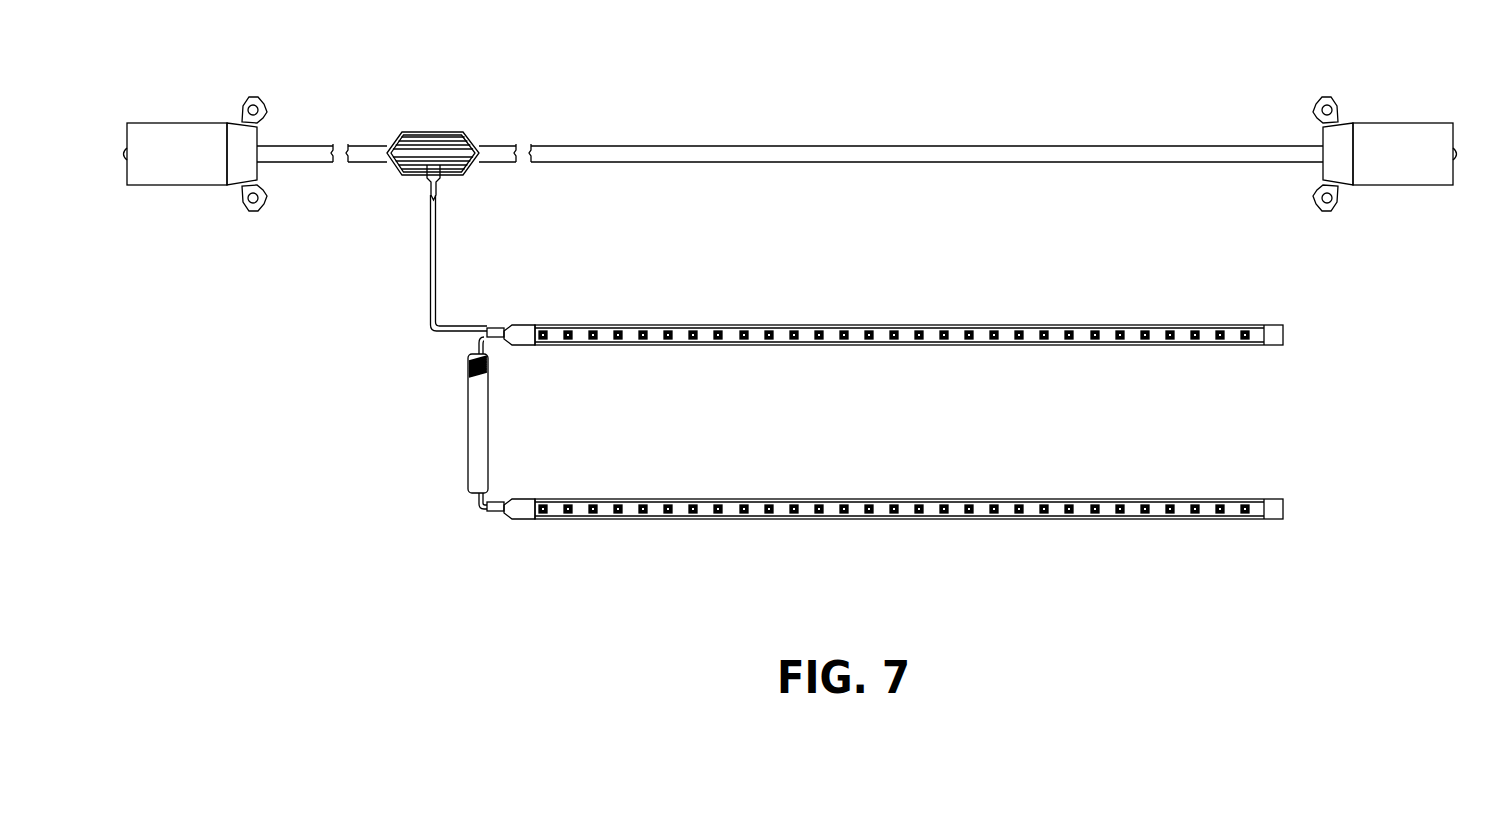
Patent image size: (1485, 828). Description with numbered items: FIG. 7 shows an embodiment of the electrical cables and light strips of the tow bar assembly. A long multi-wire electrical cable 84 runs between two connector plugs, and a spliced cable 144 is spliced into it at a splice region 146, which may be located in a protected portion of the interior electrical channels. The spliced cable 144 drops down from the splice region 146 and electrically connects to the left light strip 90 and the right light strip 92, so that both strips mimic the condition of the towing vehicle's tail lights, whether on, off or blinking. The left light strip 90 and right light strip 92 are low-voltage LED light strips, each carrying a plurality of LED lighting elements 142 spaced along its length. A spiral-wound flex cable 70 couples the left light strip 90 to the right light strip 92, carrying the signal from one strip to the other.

The spiral-wound flex cable 70 is at (468, 430).
The multi-wire electrical cable 84 is at (817, 150).
The left light strip 90 is at (885, 277).
The right light strip 92 is at (978, 512).
The LED lighting elements 142 is at (769, 330).
The spliced cable 144 is at (428, 318).
The splice region 146 is at (402, 200).